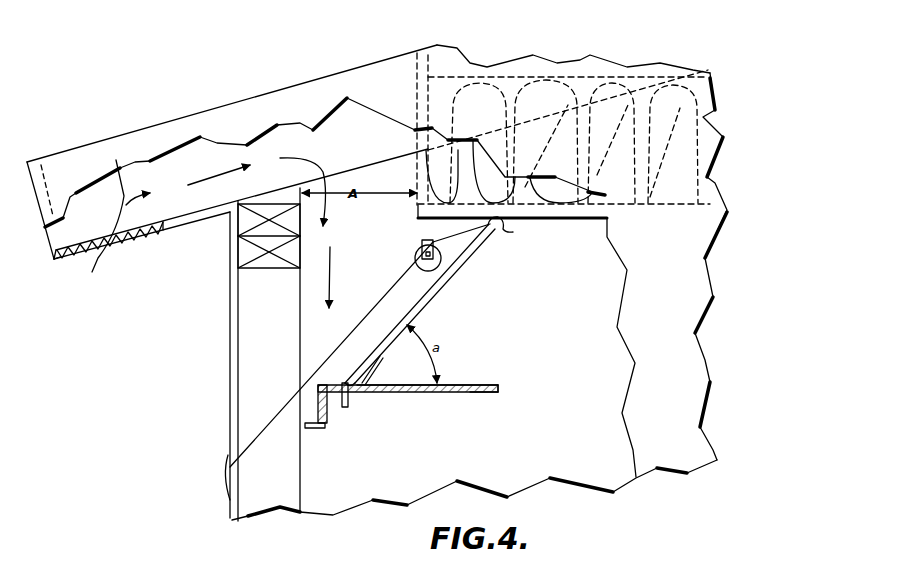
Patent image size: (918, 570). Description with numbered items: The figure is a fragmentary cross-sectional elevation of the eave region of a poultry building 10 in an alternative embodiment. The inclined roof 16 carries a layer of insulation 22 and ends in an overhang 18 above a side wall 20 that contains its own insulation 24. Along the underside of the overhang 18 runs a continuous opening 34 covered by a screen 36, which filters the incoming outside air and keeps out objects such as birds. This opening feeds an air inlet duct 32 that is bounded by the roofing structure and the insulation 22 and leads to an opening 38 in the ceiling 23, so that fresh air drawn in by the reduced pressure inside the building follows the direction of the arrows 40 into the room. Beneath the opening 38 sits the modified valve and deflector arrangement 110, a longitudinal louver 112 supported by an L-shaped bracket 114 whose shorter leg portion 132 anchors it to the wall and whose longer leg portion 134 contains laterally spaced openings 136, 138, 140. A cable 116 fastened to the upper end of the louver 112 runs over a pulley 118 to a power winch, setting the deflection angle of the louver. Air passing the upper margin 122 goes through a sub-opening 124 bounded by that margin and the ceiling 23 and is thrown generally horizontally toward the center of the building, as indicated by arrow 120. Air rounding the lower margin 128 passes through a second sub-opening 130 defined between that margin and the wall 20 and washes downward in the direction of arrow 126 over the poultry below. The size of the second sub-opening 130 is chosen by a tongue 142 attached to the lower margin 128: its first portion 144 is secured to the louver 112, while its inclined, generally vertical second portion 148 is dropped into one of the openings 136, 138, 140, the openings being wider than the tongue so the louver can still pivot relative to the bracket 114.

The building 10 is at (755, 222).
The roof 16 is at (333, 74).
The overhang 18 is at (197, 216).
The wall 20 is at (228, 372).
The insulation 22 is at (697, 100).
The ceiling 23 is at (585, 219).
The wall insulation 24 is at (260, 268).
The air inlet duct 32 is at (215, 162).
The continuous opening 34 is at (133, 250).
The screen 36 is at (63, 262).
The opening 38 is at (377, 178).
The arrows 40 is at (330, 140).
The valve and deflector arrangement 110 is at (500, 298).
The louver 112 is at (432, 305).
The bracket 114 is at (452, 384).
The cable 116 is at (272, 418).
The pulley 118 is at (443, 262).
The arrow 120 is at (371, 197).
The upper margin 122 is at (512, 233).
The sub-opening 124 is at (506, 223).
The arrow 126 is at (335, 270).
The lower margin 128 is at (372, 378).
The second sub-opening 130 is at (323, 432).
The shorter leg portion 132 is at (323, 403).
The longer leg portion 134 is at (498, 388).
The opening 136 is at (353, 392).
The opening 138 is at (413, 393).
The opening 140 is at (477, 392).
The tongue 142 is at (352, 368).
The first portion 144 is at (367, 353).
The second portion 148 is at (346, 407).